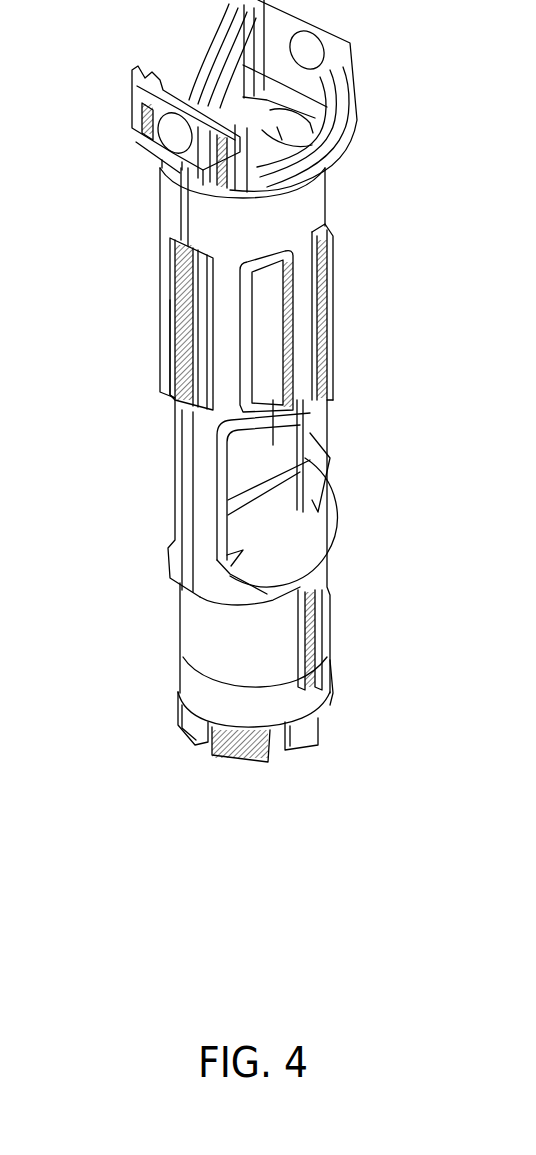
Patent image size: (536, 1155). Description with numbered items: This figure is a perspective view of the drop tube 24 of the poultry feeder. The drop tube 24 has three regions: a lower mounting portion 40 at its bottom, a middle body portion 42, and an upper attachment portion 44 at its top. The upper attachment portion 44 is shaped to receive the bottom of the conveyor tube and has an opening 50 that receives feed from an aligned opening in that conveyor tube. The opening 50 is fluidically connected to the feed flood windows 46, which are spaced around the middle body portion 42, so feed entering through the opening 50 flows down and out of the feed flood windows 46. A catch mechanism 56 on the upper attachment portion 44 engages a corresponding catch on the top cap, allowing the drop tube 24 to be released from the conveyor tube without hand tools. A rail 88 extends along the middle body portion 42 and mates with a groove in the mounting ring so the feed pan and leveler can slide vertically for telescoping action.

The drop tube 24 is at (334, 300).
The lower mounting portion 40 is at (327, 722).
The middle body portion 42 is at (173, 411).
The upper attachment portion 44 is at (356, 90).
The feed flood windows 46 is at (243, 449).
The opening 50 is at (298, 117).
The catch mechanism 56 is at (158, 136).
The rail 88 is at (170, 350).